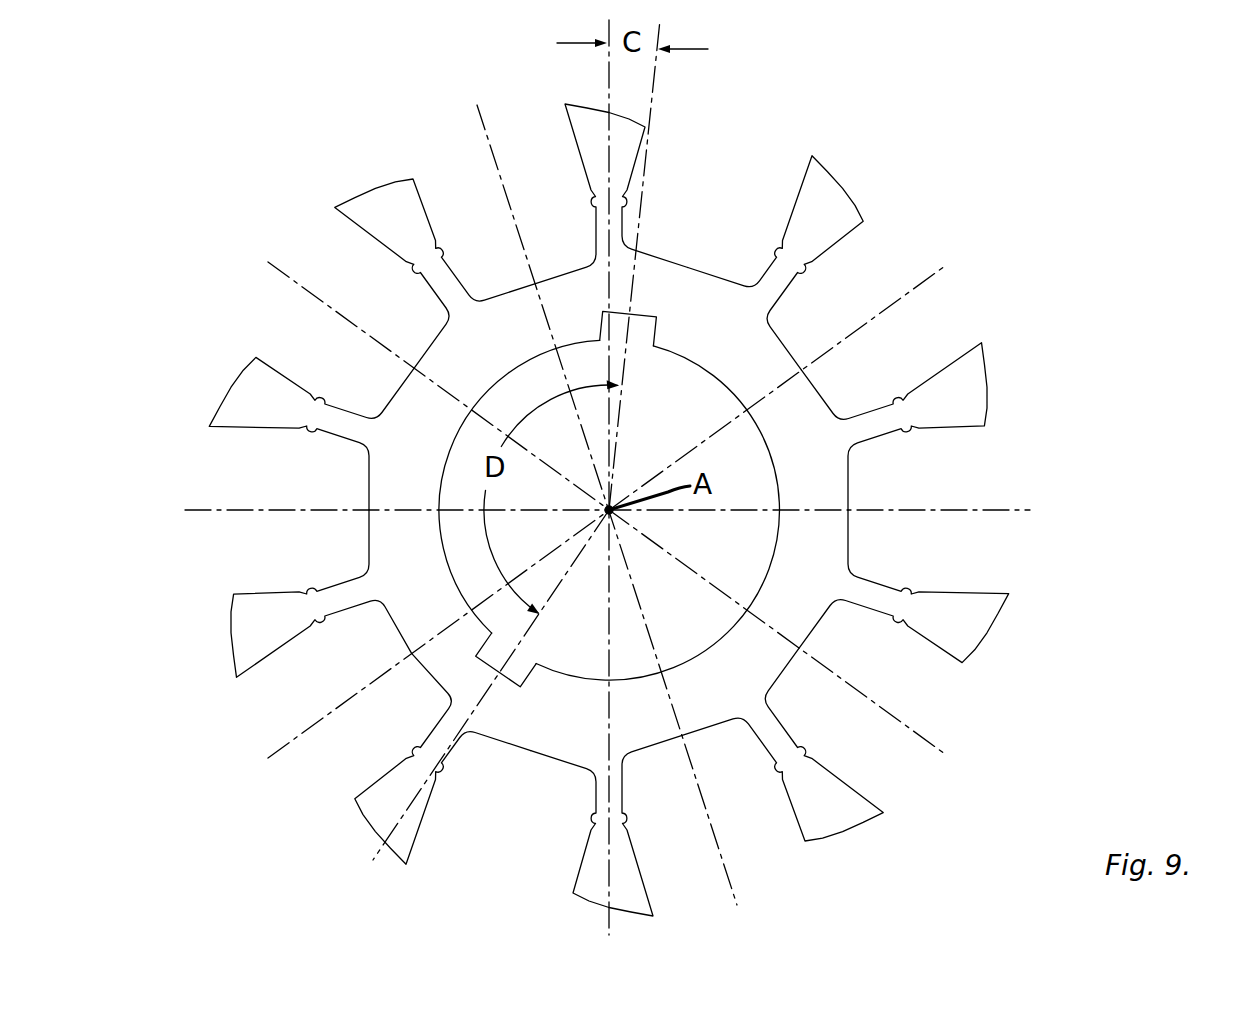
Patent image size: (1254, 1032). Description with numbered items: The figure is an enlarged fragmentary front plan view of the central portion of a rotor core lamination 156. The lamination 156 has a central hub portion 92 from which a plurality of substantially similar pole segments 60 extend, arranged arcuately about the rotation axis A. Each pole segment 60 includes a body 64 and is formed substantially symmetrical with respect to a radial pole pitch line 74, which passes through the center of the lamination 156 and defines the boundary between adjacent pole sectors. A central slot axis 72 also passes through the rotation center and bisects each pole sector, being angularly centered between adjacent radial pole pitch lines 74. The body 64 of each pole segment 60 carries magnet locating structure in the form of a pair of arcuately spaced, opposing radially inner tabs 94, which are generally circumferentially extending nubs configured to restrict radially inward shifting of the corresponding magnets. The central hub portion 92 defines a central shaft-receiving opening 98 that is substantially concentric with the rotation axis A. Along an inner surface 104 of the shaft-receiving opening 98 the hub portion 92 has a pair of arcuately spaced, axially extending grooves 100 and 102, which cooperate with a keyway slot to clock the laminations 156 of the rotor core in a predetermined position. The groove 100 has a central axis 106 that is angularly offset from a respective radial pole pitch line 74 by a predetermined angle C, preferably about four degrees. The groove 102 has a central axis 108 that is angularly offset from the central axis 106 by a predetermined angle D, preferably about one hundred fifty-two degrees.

The pole segment 60 is at (597, 133).
The body 64 is at (848, 216).
The central slot axis 72 is at (938, 725).
The radial pole pitch line 74 is at (605, 74).
The central hub portion 92 is at (818, 552).
The inner tab 94 is at (592, 198).
The central shaft-receiving opening 98 is at (762, 481).
The groove 100 is at (658, 333).
The groove 102 is at (530, 677).
The inner surface 104 is at (776, 538).
The central axis 106 is at (655, 70).
The central axis 108 is at (375, 863).
The lamination 156 is at (1022, 123).